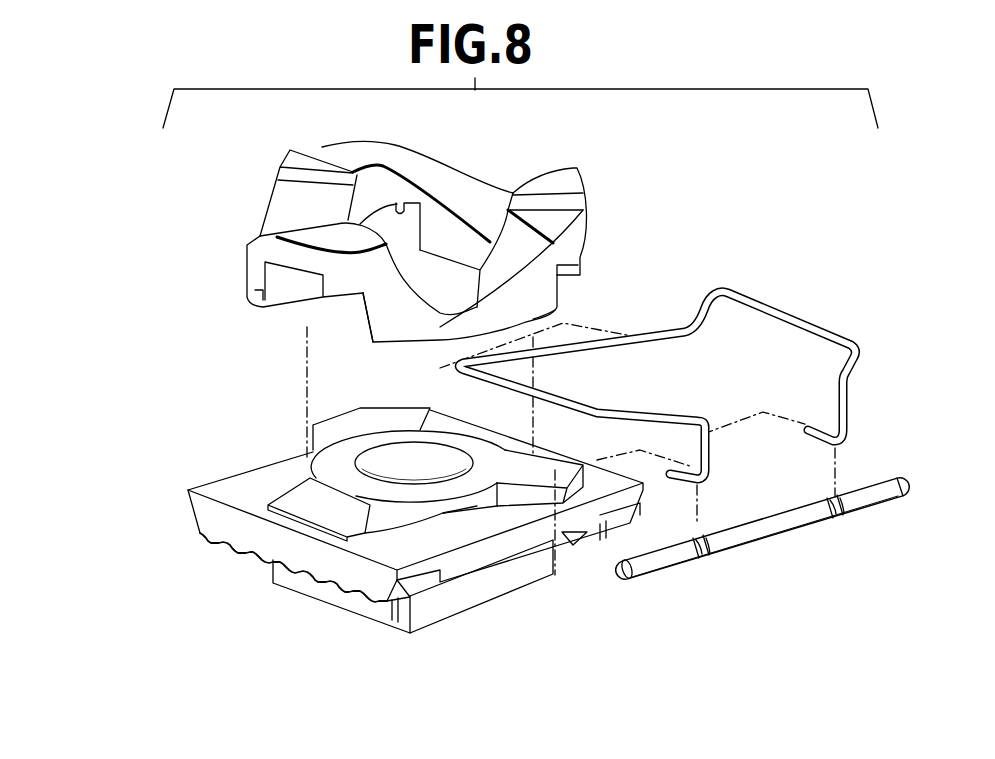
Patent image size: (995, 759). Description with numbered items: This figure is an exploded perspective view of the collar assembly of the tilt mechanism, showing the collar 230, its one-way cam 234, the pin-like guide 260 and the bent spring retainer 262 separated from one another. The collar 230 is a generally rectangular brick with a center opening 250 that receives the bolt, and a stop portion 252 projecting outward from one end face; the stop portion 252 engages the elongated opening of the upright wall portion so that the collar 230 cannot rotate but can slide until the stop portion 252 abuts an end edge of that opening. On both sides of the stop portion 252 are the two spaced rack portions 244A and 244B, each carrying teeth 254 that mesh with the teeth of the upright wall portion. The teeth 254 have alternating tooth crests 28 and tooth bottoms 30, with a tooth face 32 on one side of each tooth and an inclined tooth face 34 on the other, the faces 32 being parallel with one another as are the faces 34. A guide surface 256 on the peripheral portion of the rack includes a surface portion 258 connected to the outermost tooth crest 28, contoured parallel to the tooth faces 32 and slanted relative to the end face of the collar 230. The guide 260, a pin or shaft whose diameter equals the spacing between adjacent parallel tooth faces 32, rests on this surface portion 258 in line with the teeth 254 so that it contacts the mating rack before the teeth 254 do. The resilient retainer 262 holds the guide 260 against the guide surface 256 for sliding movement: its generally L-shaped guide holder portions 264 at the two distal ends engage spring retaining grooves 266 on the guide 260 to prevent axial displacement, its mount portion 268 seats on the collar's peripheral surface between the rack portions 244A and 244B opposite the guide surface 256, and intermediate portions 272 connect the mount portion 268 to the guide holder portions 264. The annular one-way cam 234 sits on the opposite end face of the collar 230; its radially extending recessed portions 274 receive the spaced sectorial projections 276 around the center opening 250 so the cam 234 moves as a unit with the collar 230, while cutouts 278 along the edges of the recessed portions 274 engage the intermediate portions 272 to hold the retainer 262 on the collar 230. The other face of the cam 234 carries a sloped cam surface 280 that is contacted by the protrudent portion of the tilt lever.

The collar 230 is at (188, 484).
The one-way cam 234 is at (543, 172).
The rack portion 244A is at (183, 520).
The rack portion 244B is at (586, 558).
The center opening 250 is at (290, 465).
The stop portion 252 is at (493, 595).
The teeth 254 is at (226, 566).
The guide surface 256 is at (413, 585).
The surface portion 258 is at (395, 602).
The guide 260 is at (765, 540).
The resilient retainer 262 is at (748, 297).
The guide holder portions 264 is at (853, 417).
The spring retaining grooves 266 is at (700, 557).
The mount portion 268 is at (655, 332).
The intermediate portions 272 is at (790, 310).
The recessed portions 274 is at (397, 202).
The sectorial projections 276 is at (385, 412).
The cutouts 278 is at (255, 298).
The sloped cam surface 280 is at (455, 178).
The tooth crests 28 is at (250, 563).
The tooth bottoms 30 is at (260, 565).
The tooth face 32 is at (363, 597).
The tooth face 34 is at (347, 593).